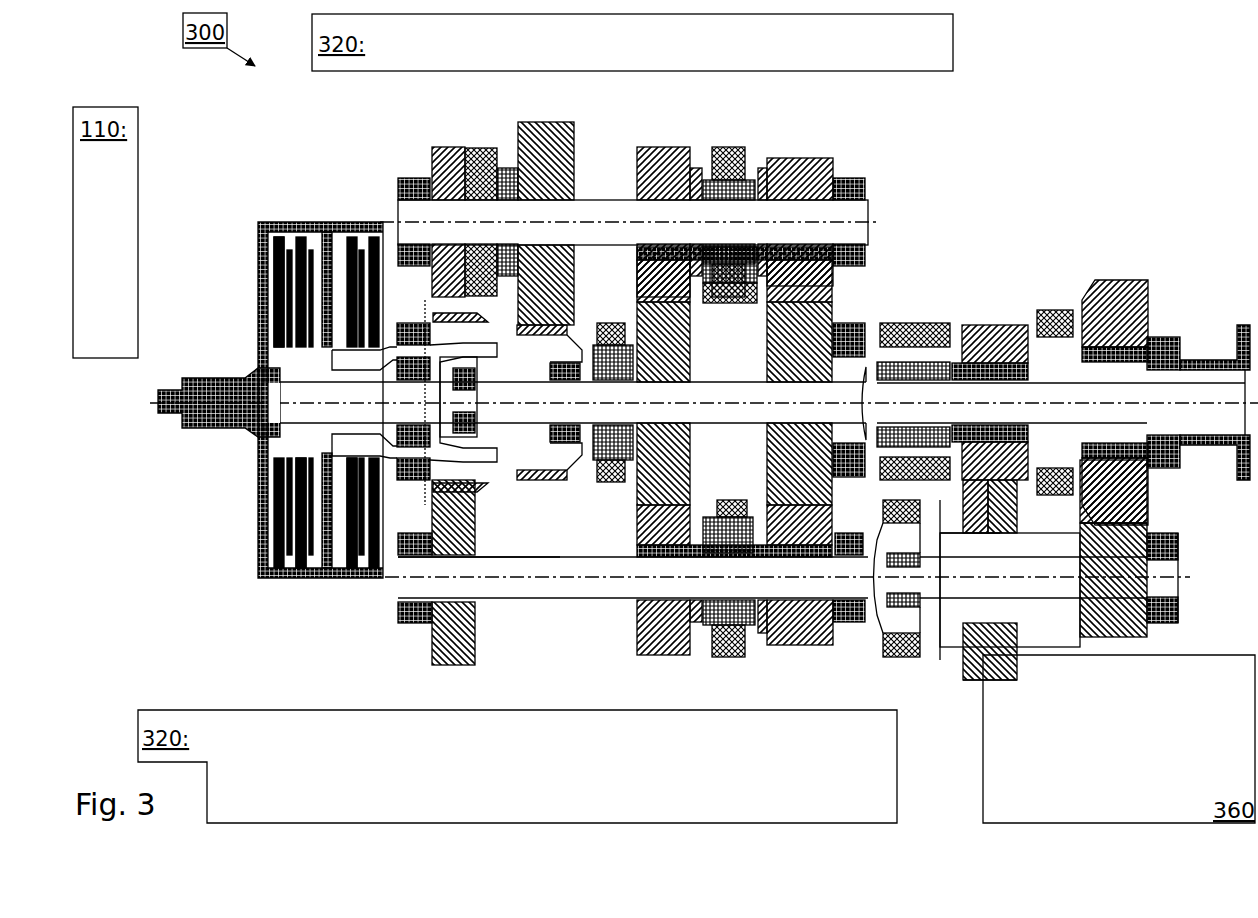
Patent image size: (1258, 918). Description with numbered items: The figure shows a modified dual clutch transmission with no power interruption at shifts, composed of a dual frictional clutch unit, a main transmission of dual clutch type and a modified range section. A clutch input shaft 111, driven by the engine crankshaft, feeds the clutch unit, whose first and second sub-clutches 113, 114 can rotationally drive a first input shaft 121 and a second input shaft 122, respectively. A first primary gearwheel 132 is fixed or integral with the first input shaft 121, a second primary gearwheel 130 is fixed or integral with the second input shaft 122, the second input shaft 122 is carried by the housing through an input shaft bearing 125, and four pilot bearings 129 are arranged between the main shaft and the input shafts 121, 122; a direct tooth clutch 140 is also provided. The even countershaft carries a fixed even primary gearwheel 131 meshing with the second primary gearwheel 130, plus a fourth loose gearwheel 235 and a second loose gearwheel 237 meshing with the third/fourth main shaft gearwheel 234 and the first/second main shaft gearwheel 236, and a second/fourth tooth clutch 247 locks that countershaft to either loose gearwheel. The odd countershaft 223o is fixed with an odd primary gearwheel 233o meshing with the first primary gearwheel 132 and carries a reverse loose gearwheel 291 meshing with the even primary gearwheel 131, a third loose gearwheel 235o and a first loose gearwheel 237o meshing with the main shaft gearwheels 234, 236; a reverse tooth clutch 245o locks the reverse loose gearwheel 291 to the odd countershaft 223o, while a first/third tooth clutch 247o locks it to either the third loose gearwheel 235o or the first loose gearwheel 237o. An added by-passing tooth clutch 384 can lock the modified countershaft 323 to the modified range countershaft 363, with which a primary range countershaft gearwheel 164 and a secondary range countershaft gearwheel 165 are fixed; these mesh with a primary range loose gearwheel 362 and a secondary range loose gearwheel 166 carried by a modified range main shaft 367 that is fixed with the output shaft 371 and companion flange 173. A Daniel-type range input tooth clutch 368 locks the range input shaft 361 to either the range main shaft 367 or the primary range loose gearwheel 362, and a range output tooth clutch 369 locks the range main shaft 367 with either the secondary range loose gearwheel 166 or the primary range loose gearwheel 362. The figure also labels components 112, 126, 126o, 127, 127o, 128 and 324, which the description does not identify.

The clutch input shaft 111 is at (197, 386).
The stator 112 is at (322, 222).
The first sub-clutch 113 is at (283, 353).
The second sub-clutch 114 is at (338, 350).
The bearing 126 is at (407, 484).
The input shaft bearing 125 is at (387, 445).
The pilot bearings 129 is at (478, 398).
The first primary gearwheel 132 is at (550, 482).
The direct tooth clutch 140 is at (612, 484).
The odd countershaft 223o is at (603, 198).
The bearing 126o is at (410, 176).
The reverse loose gearwheel 291 is at (444, 145).
The reverse tooth clutch 245o is at (488, 146).
The odd primary gearwheel 233o is at (555, 120).
The third loose gearwheel 235o is at (683, 145).
The first/third tooth clutch 247o is at (735, 145).
The first loose gearwheel 237o is at (802, 156).
The bearing 127o is at (862, 176).
The third/fourth main shaft gearwheel 234 is at (664, 508).
The first/second main shaft gearwheel 236 is at (800, 518).
The third shaft 324 is at (733, 426).
The modified countershaft 323 is at (517, 590).
The bearing 128 is at (855, 486).
The second/fourth tooth clutch 247 is at (713, 662).
The second primary gearwheel 130 is at (399, 628).
The even primary gearwheel 131 is at (440, 670).
The fourth loose gearwheel 235 is at (648, 660).
The second loose gearwheel 237 is at (778, 650).
The bearing 127 is at (850, 626).
The first input shaft 121 is at (293, 558).
The second input shaft 122 is at (338, 558).
The by-passing tooth clutch 384 is at (910, 661).
The primary range loose gearwheel 362 is at (1037, 548).
The range countershaft 363 is at (1002, 550).
The range input tooth clutch 368 is at (1020, 686).
The range output tooth clutch 369 is at (1008, 594).
The primary range countershaft gearwheel 164 is at (1052, 497).
The secondary range countershaft gearwheel 165 is at (1118, 500).
The secondary range loose gearwheel 166 is at (1172, 626).
The range input shaft 361 is at (1118, 418).
The range main shaft 367 is at (848, 413).
The companion flange 173 is at (1242, 322).
The output shaft 371 is at (1192, 392).